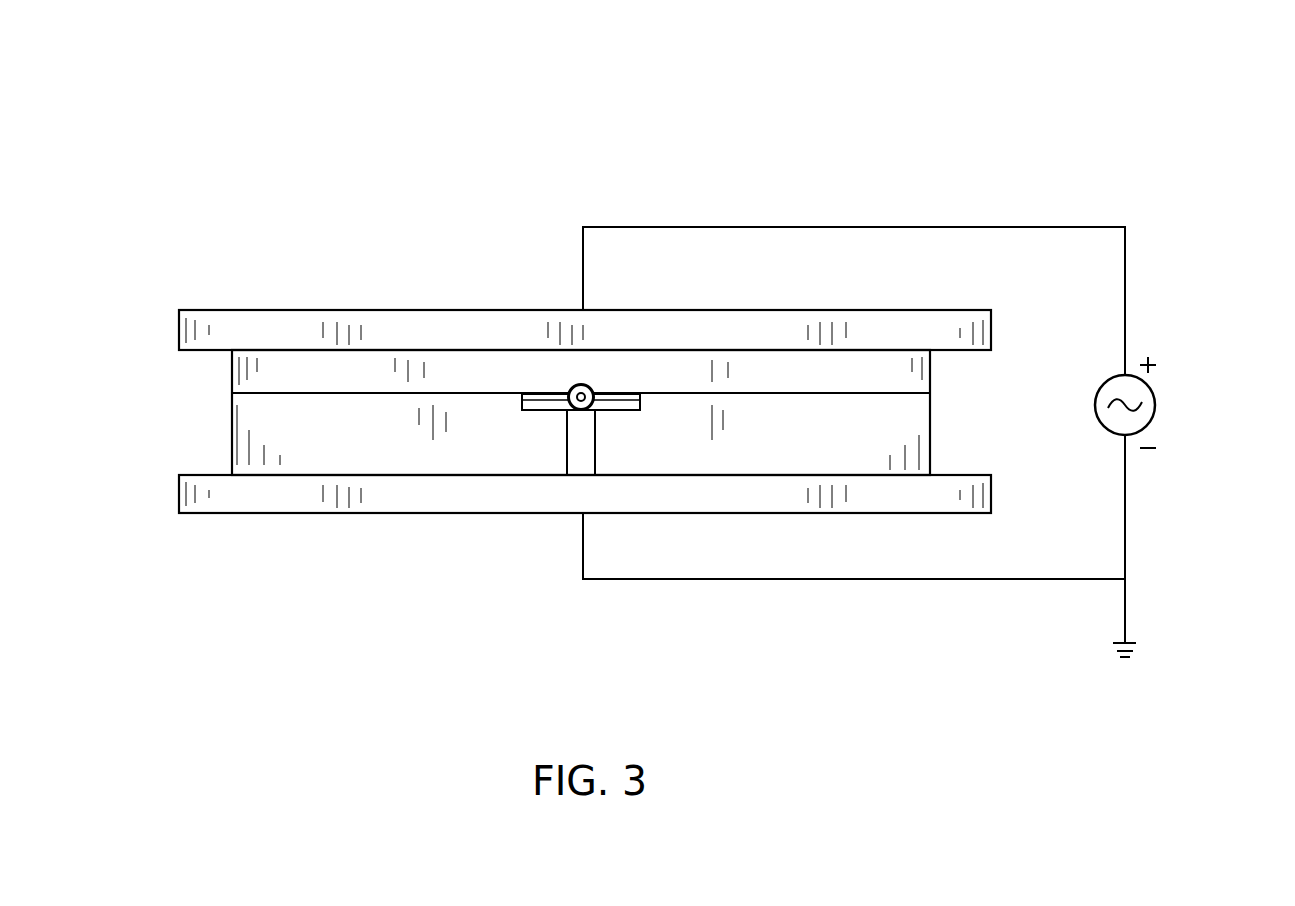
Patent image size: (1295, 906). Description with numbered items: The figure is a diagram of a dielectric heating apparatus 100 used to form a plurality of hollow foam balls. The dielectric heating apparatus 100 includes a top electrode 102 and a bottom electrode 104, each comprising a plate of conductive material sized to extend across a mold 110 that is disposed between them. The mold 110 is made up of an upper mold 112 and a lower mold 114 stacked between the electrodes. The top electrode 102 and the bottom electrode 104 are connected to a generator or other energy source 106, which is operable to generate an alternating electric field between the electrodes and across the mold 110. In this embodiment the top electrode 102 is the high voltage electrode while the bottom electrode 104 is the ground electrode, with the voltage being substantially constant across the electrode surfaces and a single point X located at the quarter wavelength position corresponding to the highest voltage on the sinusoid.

The dielectric heating apparatus 100 is at (338, 146).
The top electrode 102 is at (277, 322).
The bottom electrode 104 is at (292, 503).
The energy source 106 is at (1155, 402).
The mold 110 is at (160, 351).
The upper mold 112 is at (463, 370).
The lower mold 114 is at (363, 446).